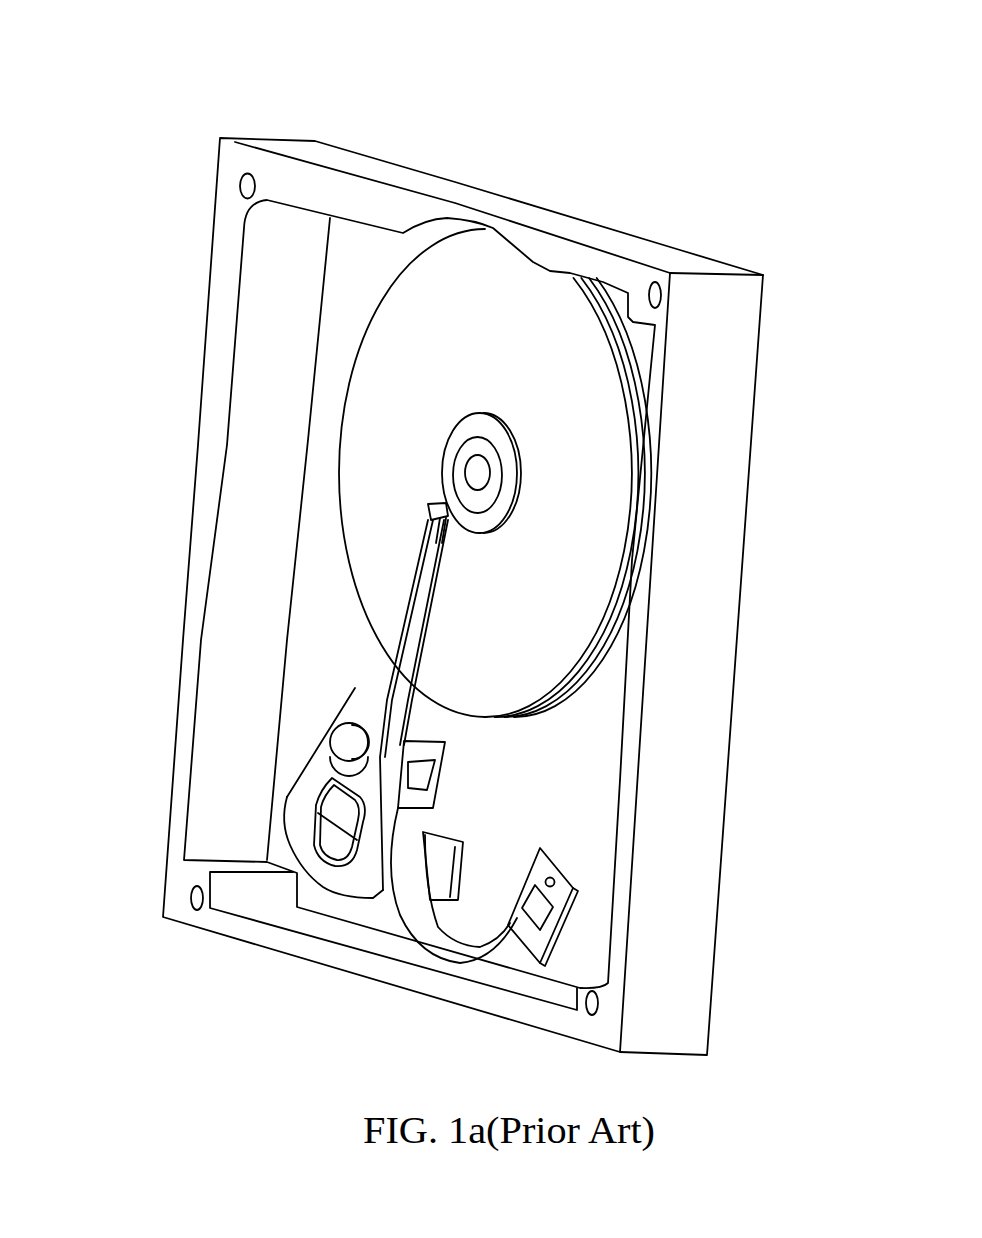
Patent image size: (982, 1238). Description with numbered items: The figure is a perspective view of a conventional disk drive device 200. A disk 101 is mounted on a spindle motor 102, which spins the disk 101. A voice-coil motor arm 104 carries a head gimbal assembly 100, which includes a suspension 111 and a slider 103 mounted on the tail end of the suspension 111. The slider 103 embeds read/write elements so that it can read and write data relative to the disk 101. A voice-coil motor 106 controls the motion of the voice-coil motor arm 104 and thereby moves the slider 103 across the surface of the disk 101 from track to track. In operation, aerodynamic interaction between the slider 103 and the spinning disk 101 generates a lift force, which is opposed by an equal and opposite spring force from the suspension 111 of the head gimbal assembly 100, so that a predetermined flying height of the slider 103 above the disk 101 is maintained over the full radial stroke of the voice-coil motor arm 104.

The head gimbal assembly 100 is at (449, 672).
The disk 101 is at (400, 352).
The spindle motor 102 is at (477, 450).
The slider 103 is at (450, 537).
The voice-coil motor arm 104 is at (367, 695).
The voice-coil motor 106 is at (438, 860).
The suspension 111 is at (400, 628).
The disk drive device 200 is at (792, 713).